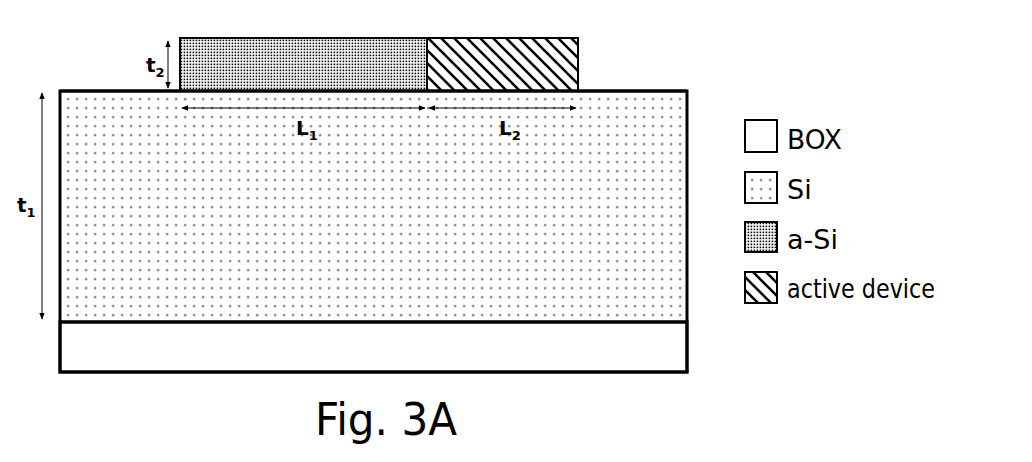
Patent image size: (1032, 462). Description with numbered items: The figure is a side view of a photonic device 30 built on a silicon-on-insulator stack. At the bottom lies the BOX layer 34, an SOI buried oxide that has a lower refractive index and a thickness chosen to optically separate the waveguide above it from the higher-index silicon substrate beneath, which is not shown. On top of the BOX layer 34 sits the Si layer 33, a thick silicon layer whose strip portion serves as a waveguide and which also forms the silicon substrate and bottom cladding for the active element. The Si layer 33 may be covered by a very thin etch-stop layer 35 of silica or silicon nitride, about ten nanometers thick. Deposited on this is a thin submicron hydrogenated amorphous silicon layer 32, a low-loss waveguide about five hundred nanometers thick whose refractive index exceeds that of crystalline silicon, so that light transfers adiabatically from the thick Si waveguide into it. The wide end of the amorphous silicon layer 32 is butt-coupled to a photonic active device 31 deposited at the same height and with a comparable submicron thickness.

The photonic device 30 is at (710, 87).
The photonic active device 31 is at (579, 60).
The hydrogenated amorphous silicon layer 32 is at (185, 37).
The Si layer 33 is at (135, 210).
The BOX layer 34 is at (647, 350).
The etch-stop layer 35 is at (647, 90).